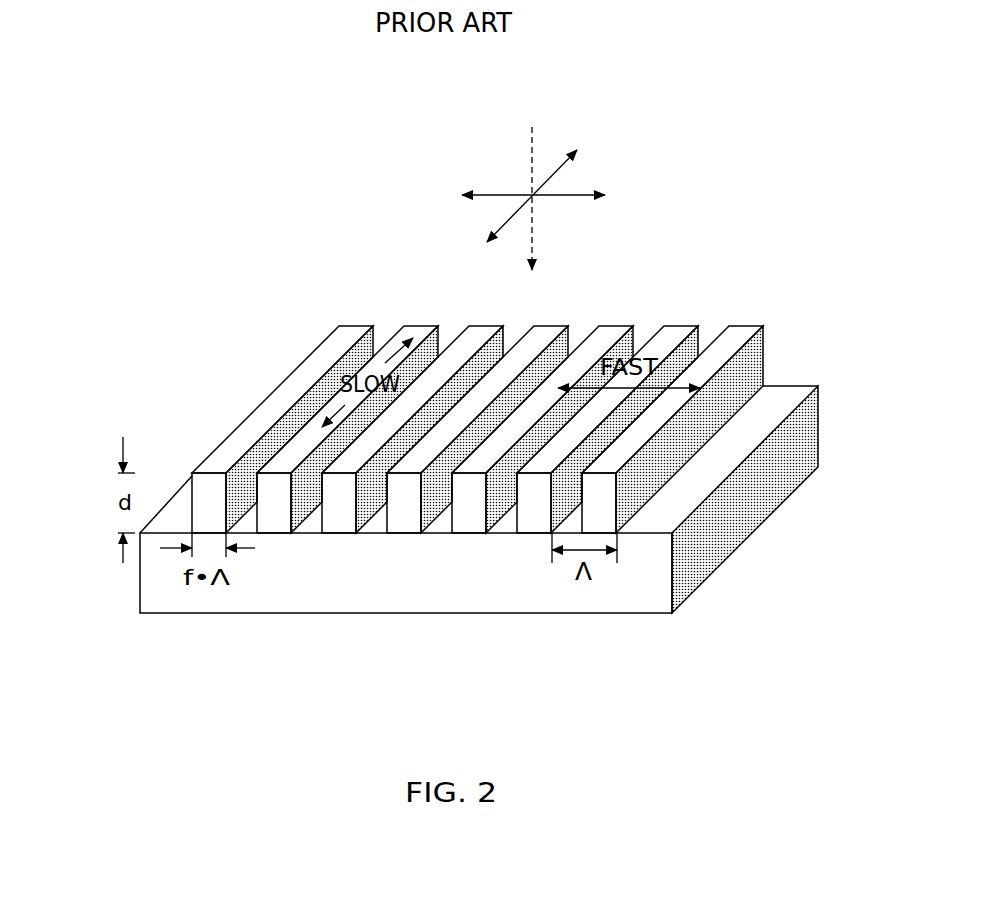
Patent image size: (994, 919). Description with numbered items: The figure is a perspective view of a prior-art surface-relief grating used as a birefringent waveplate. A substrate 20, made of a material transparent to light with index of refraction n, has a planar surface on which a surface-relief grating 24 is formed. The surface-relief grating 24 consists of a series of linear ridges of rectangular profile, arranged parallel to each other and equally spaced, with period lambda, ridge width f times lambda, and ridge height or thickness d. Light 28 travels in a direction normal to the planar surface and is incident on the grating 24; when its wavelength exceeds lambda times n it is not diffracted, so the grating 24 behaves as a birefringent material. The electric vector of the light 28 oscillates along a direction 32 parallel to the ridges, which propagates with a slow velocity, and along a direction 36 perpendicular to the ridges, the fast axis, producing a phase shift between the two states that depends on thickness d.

The substrate 20 is at (479, 499).
The surface-relief grating 24 is at (297, 296).
The light 28 is at (517, 190).
The direction parallel to the linear ridges 32 is at (546, 182).
The direction perpendicular to the linear ridges 36 is at (547, 212).